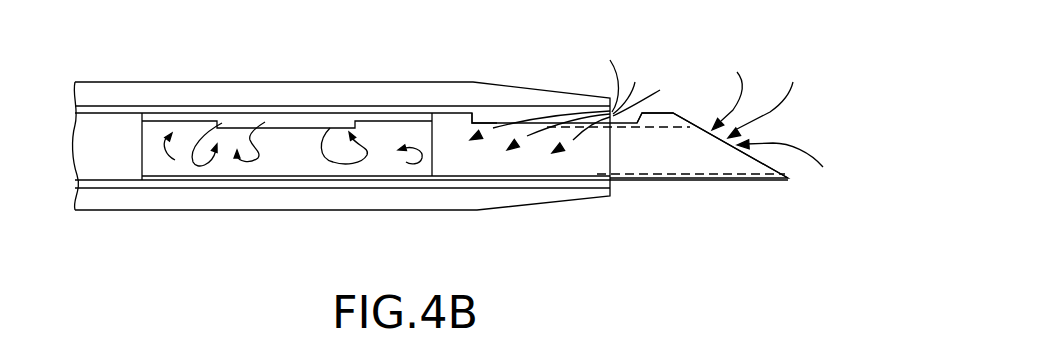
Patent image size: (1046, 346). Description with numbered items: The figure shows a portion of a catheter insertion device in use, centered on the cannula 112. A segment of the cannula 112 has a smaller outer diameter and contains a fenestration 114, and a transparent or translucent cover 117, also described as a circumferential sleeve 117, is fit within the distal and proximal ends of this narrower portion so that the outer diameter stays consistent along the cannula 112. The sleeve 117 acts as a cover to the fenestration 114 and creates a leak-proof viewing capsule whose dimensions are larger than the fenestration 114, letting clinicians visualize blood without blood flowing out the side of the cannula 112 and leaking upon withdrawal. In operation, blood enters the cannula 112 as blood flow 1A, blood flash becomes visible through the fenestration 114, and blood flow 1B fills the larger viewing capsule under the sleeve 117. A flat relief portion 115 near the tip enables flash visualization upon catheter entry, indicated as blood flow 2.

The fenestration 114 is at (287, 128).
The cover 117 is at (400, 133).
The flat relief portion 115 is at (497, 123).
The blood flow 2 is at (530, 124).
The cannula 112 is at (680, 155).
The blood flow 1A is at (762, 100).
The blood flow 1B is at (263, 153).